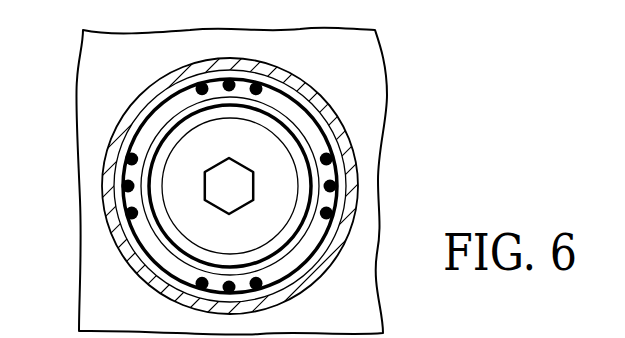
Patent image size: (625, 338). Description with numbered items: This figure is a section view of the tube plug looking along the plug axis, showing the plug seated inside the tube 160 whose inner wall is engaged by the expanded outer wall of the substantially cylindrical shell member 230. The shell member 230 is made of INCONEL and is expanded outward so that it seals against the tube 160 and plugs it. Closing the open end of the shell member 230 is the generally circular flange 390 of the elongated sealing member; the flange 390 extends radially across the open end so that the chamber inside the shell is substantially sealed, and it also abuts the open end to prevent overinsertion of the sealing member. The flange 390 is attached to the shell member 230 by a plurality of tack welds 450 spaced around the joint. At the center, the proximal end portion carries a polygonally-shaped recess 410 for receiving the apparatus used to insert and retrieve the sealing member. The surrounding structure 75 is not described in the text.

The mounting plate 75 is at (100, 73).
The tube 160 is at (258, 68).
The shell member 230 is at (308, 135).
The tack welds 450 is at (118, 193).
The flange 390 is at (185, 262).
The polygonally-shaped recess 410 is at (240, 187).